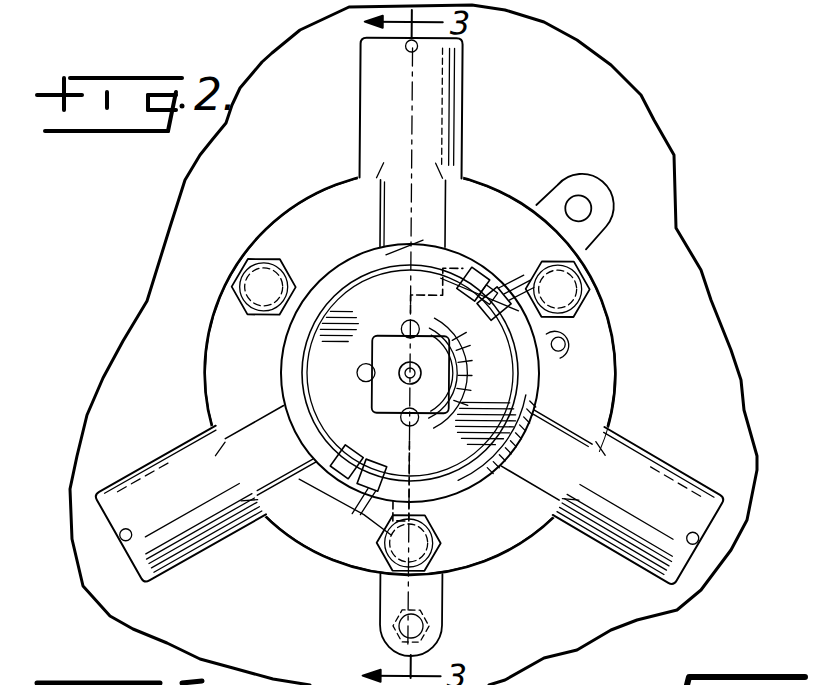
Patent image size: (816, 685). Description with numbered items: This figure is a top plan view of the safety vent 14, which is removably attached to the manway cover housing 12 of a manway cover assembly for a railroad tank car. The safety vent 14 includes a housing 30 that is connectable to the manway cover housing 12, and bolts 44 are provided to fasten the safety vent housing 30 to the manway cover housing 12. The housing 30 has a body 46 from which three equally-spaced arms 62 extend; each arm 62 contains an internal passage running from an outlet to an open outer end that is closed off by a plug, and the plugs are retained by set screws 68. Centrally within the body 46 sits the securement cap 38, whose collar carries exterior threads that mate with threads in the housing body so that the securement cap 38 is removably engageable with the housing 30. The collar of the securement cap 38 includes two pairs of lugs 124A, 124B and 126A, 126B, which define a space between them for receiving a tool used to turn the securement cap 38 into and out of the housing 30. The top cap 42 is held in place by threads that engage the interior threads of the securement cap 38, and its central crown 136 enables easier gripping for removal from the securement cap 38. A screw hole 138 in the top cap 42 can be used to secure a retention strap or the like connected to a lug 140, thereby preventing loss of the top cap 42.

The manway cover housing 12 is at (624, 103).
The safety vent 14 is at (198, 402).
The safety vent housing 30 is at (198, 365).
The securement cap 38 is at (459, 512).
The top cap 42 is at (470, 478).
The bolts 44 is at (590, 279).
The body 46 is at (612, 391).
The arms 62 is at (459, 100).
The set screws 68 is at (404, 47).
The lug 124A is at (470, 226).
The lug 124B is at (512, 252).
The lug 126A is at (316, 500).
The lug 126B is at (389, 514).
The central crown 136 is at (374, 351).
The screw hole 138 is at (406, 378).
The lug 140 is at (627, 180).